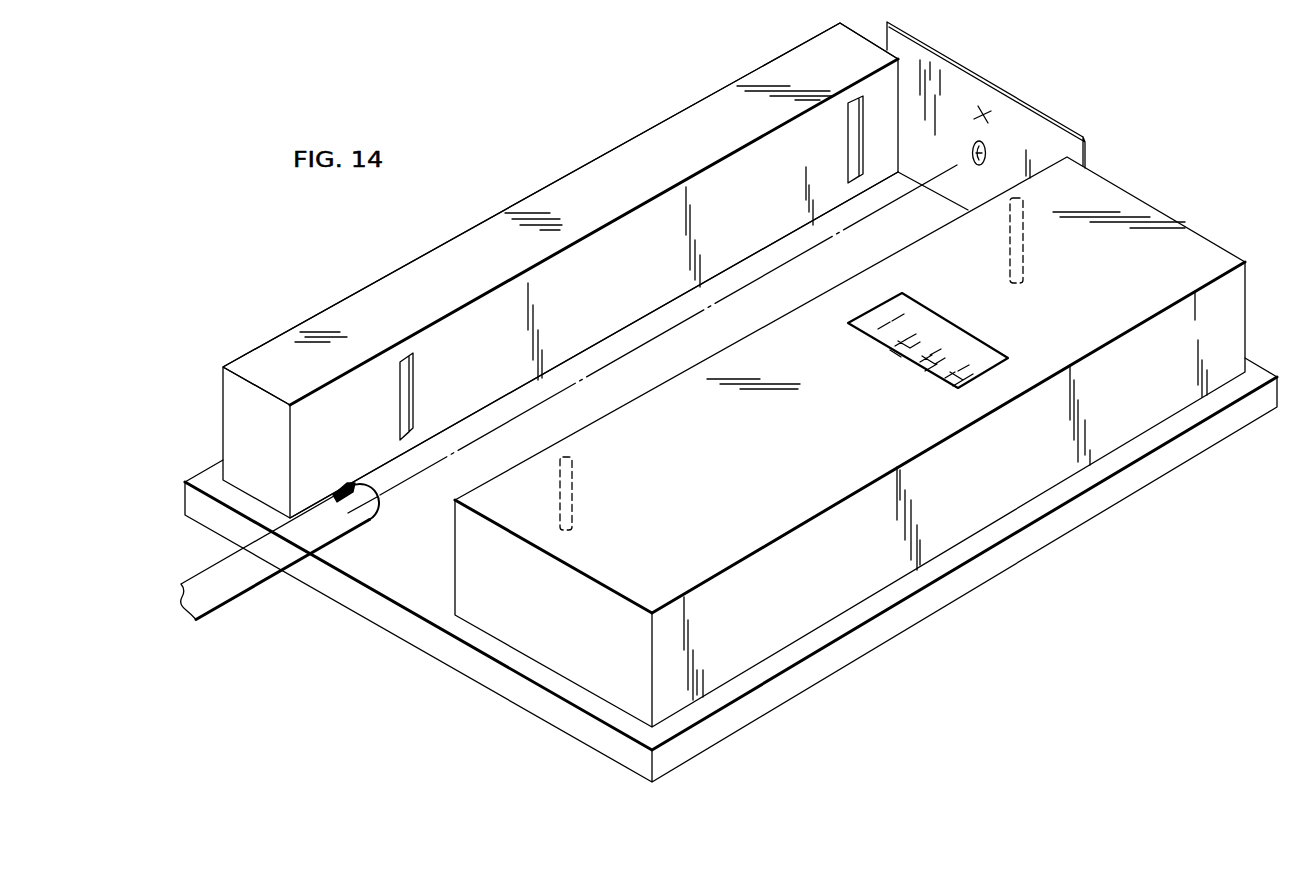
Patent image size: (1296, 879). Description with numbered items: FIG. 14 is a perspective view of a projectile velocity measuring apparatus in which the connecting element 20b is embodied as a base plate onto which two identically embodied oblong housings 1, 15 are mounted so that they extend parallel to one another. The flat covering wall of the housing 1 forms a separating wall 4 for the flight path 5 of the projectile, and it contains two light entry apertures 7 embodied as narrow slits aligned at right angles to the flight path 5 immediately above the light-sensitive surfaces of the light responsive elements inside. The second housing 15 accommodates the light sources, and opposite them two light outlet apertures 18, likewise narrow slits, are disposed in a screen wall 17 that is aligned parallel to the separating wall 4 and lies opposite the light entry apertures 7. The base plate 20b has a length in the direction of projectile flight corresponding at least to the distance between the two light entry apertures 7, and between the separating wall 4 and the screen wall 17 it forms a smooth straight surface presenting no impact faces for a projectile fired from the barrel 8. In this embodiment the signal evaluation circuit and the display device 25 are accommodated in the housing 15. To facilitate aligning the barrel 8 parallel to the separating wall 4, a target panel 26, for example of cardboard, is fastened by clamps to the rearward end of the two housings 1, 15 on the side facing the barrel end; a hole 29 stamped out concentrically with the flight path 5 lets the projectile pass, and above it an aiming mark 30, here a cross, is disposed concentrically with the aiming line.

The housing 1 is at (434, 273).
The separating wall 4 is at (625, 234).
The flight path 5 is at (412, 480).
The light entry apertures 7 is at (413, 394).
The barrel 8 is at (235, 587).
The second housing 15 is at (997, 497).
The screen wall 17 is at (670, 379).
The light outlet apertures 18 is at (1012, 248).
The connecting element 20b is at (362, 617).
The display device 25 is at (953, 333).
The target panel 26 is at (1017, 108).
The hole 29 is at (986, 143).
The aiming mark 30 is at (985, 111).